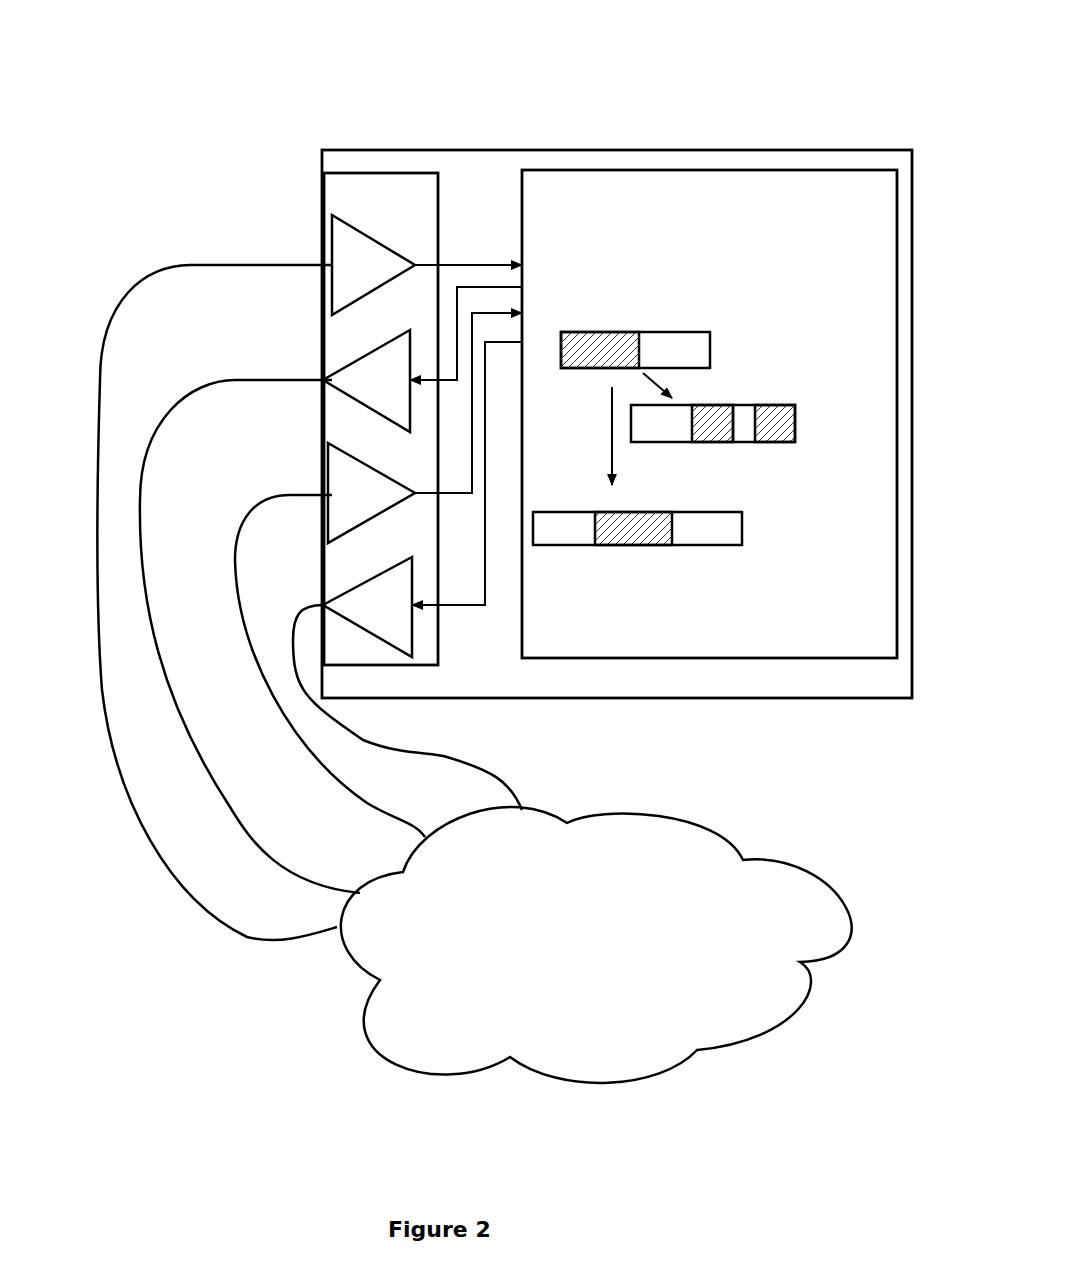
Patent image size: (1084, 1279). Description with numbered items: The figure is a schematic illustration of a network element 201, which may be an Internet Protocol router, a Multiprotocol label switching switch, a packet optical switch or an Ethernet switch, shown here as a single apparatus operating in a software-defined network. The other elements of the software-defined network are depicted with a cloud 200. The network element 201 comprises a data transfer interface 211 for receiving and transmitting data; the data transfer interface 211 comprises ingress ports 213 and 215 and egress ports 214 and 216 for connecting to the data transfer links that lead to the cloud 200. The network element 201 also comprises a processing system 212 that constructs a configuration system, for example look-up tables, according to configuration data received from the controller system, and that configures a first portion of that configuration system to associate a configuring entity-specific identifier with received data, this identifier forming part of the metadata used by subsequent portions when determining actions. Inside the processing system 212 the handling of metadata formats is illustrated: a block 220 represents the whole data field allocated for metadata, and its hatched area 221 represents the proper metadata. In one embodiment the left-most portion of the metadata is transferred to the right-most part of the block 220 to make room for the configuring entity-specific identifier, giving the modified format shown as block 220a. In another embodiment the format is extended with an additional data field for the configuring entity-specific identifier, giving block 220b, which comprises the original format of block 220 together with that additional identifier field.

The cloud 200 is at (613, 954).
The network element 201 is at (692, 150).
The data transfer interface 211 is at (438, 655).
The processing system 212 is at (836, 214).
The ingress port 213 is at (381, 277).
The egress port 214 is at (398, 392).
The ingress port 215 is at (381, 505).
The egress port 216 is at (400, 617).
The block 220 is at (652, 414).
The block 220a is at (795, 451).
The block 220b is at (745, 596).
The hatched area 221 is at (600, 321).